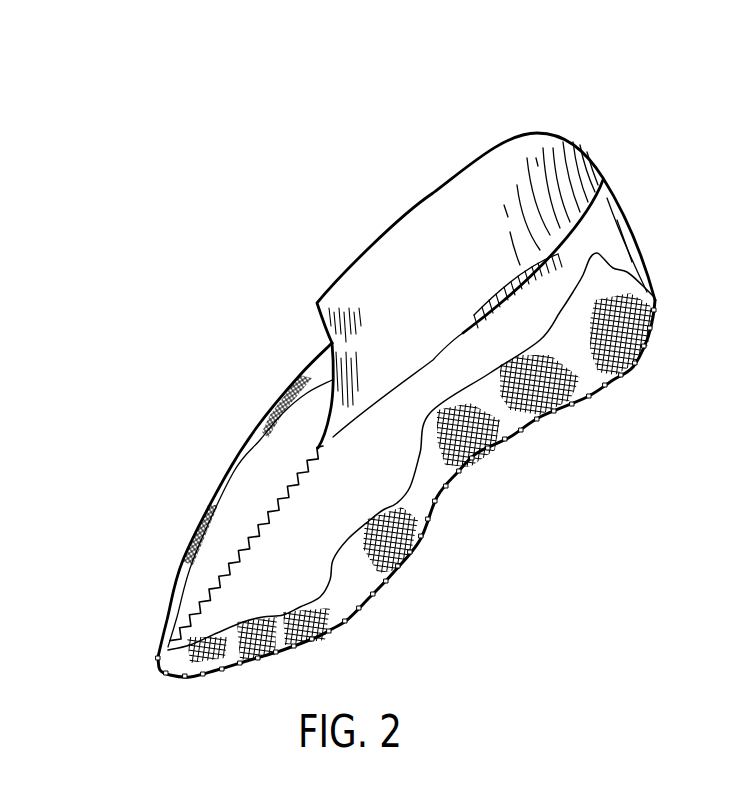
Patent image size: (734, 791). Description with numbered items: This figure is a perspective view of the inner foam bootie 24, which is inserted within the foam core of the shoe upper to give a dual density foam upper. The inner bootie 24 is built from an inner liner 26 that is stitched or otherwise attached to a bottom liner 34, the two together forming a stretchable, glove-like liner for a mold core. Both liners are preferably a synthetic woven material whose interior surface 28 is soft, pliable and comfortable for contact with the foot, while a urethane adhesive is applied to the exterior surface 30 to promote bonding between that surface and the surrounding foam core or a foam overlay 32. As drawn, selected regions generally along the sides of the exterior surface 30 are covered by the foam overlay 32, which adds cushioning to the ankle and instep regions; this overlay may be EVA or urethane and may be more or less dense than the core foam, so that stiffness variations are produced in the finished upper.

The inner foam bootie 24 is at (589, 126).
The inner liner 26 is at (608, 233).
The interior surface 28 is at (368, 282).
The exterior surface 30 is at (373, 437).
The foam overlay 32 is at (656, 298).
The bottom liner 34 is at (520, 289).